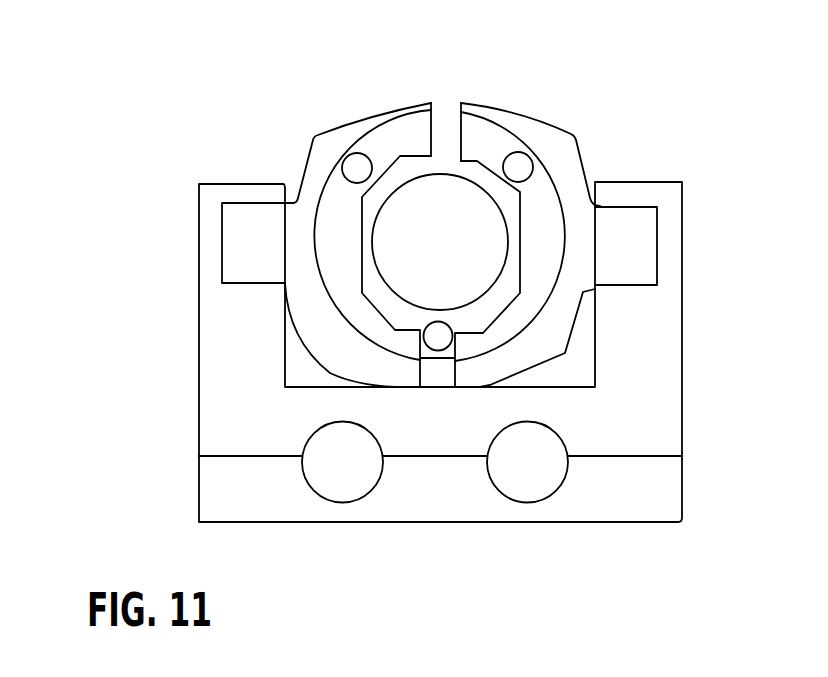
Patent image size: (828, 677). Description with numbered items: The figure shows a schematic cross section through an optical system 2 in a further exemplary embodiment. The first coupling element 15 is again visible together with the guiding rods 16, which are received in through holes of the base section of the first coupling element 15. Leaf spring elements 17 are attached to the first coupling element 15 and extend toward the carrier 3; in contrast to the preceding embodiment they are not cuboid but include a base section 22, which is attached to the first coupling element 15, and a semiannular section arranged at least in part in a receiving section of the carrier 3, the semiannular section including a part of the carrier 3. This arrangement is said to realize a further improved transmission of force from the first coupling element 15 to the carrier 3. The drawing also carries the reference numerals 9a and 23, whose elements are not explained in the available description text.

The optical system 2 is at (147, 450).
The carrier 3 is at (440, 128).
The screw holes 9a is at (358, 170).
The first coupling element 15 is at (220, 487).
The guiding rods 16 is at (342, 487).
The leaf spring elements 17 is at (322, 153).
The base section 22 is at (244, 224).
The inner ring 23 is at (348, 137).